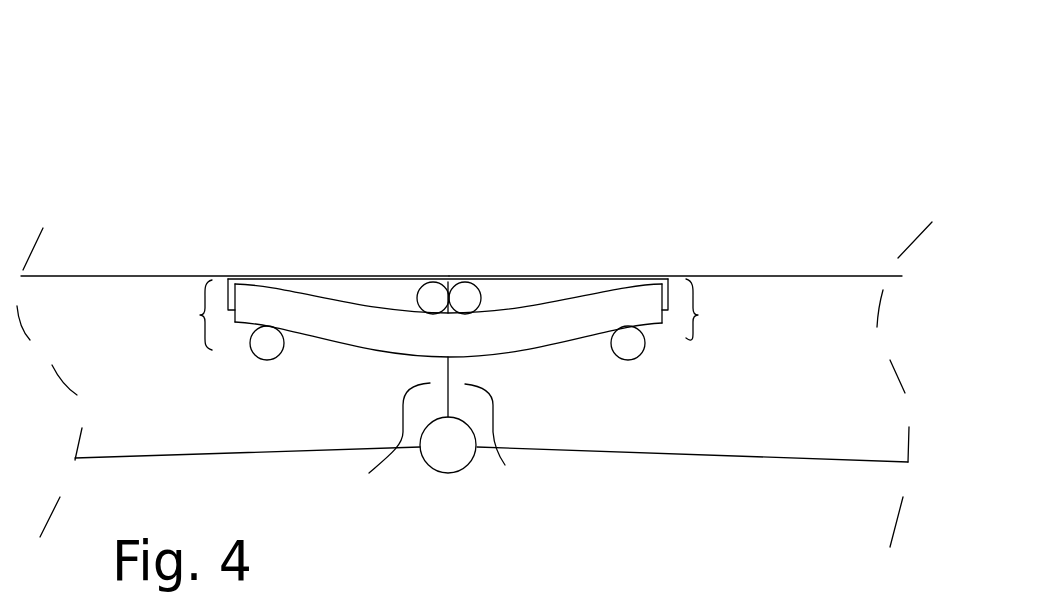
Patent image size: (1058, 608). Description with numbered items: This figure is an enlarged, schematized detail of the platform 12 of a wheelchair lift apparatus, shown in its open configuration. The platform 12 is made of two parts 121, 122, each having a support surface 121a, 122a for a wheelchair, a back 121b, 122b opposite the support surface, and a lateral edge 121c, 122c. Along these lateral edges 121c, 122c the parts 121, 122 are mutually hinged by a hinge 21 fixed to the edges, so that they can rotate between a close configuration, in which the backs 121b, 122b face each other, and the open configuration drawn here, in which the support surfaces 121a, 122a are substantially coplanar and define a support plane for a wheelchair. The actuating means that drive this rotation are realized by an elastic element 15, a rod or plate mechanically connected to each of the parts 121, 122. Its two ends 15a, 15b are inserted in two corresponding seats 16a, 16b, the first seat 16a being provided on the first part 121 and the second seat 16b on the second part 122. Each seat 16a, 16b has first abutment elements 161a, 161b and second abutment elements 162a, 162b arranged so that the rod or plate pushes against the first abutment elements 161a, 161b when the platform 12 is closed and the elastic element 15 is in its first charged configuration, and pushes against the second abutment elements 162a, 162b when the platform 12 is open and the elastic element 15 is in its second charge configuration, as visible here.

The platform 12 is at (727, 125).
The first part of the platform 121 is at (146, 293).
The support surface 121a is at (80, 276).
The back 121b is at (167, 453).
The lateral edge 121c is at (382, 444).
The second part of the platform 122 is at (800, 237).
The support surface 122a is at (848, 276).
The back 122b is at (775, 458).
The lateral edge 122c is at (501, 444).
The elastic element 15 is at (539, 363).
The end of the elastic element 15a is at (262, 302).
The end of the elastic element 15b is at (633, 305).
The first seat 16a is at (182, 315).
The second seat 16b is at (718, 309).
The first abutment element 161a is at (330, 279).
The first abutment element 161b is at (574, 280).
The second abutment element 162a is at (267, 353).
The second abutment element 162b is at (625, 380).
The hinge 21 is at (444, 490).